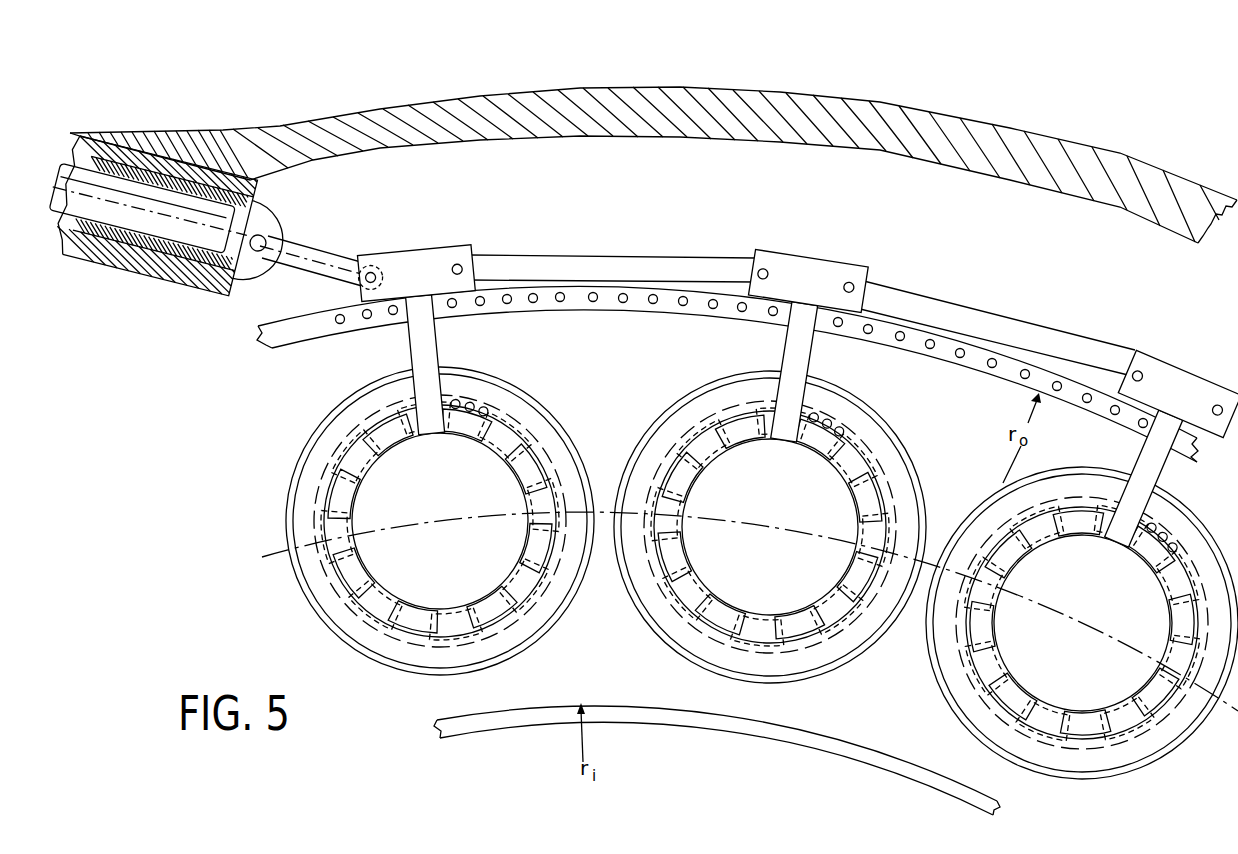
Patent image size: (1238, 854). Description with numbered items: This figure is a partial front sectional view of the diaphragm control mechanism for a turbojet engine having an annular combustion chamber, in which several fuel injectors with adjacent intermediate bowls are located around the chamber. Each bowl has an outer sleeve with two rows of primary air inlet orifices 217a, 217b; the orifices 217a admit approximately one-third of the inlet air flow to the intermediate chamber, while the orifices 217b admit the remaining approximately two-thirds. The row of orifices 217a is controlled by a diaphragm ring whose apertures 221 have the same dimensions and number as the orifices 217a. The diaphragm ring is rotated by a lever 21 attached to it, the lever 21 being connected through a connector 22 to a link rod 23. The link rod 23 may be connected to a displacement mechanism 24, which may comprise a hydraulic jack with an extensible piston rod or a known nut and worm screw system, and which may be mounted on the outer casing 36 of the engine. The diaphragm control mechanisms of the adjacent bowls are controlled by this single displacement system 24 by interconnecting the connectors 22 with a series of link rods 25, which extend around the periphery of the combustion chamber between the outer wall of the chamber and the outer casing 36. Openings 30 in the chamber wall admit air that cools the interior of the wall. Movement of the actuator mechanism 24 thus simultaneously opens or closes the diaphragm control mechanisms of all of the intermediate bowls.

The outer casing 36 is at (858, 110).
The displacement mechanism 24 is at (222, 296).
The link rod 23 is at (336, 258).
The connector 22 is at (428, 266).
The link rods 25 is at (627, 270).
The openings 30 is at (594, 302).
The lever 21 is at (430, 344).
The apertures 221 is at (348, 502).
The primary air inlet orifices 217b is at (490, 408).
The primary air inlet orifices 217a is at (849, 468).